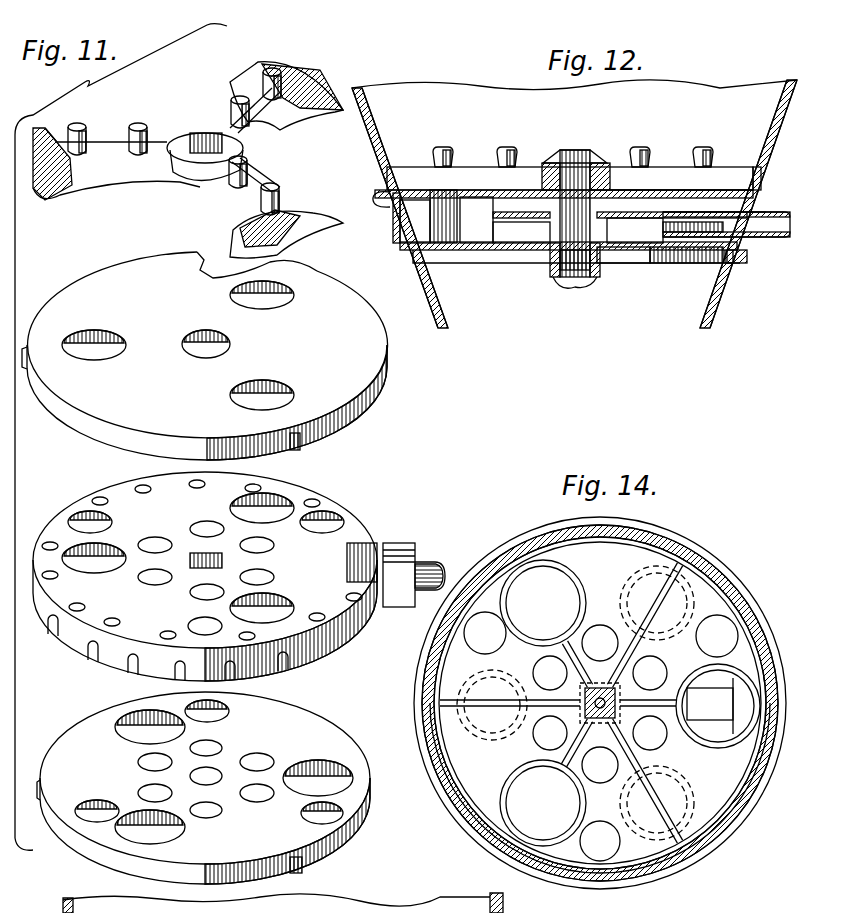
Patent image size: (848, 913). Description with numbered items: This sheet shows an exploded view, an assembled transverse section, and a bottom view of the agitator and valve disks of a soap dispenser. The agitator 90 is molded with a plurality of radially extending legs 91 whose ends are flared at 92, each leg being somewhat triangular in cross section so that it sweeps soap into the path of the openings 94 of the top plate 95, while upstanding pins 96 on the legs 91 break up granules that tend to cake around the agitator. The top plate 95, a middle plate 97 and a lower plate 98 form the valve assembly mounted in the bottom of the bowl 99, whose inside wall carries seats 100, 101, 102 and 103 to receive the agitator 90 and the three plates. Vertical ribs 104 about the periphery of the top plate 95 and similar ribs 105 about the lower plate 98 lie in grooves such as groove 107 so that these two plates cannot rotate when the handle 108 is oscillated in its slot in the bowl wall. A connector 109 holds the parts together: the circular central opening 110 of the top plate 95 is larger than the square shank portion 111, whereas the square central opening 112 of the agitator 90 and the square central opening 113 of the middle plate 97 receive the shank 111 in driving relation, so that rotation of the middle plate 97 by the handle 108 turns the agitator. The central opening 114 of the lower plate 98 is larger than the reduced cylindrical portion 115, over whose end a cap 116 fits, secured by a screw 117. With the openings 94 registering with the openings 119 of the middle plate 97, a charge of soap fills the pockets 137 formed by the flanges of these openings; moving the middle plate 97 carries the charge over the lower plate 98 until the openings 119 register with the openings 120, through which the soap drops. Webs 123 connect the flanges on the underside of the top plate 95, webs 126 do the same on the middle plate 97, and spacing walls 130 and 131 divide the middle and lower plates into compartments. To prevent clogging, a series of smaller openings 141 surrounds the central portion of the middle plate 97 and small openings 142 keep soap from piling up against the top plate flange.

In FIG. 11, the agitator 90 is at (120, 178).
In FIG. 12, the agitator 90 is at (472, 165).
In FIG. 11, the legs 91 is at (280, 130).
In FIG. 11, the flared ends 92 is at (320, 80).
In FIG. 11, the openings 94 is at (103, 337).
In FIG. 12, the openings 94 is at (393, 210).
In FIG. 11, the top plate 95 is at (367, 375).
In FIG. 12, the top plate 95 is at (522, 190).
In FIG. 11, the upstanding pins 96 is at (138, 125).
In FIG. 12, the upstanding pins 96 is at (441, 147).
In FIG. 11, the middle plate 97 is at (360, 520).
In FIG. 12, the middle plate 97 is at (522, 218).
In FIG. 11, the lower plate 98 is at (337, 740).
In FIG. 12, the lower plate 98 is at (523, 250).
In FIG. 14, the lower plate 98 is at (718, 790).
In FIG. 12, the bowl 99 is at (747, 92).
In FIG. 14, the bowl 99 is at (613, 845).
In FIG. 12, the seat 100 is at (761, 186).
In FIG. 12, the seat 101 is at (765, 212).
In FIG. 12, the seat 102 is at (737, 262).
In FIG. 11, the seat 103 is at (95, 802).
In FIG. 12, the seat 103 is at (735, 277).
In FIG. 14, the seat 103 is at (713, 622).
In FIG. 11, the vertical ribs 104 is at (260, 800).
In FIG. 14, the vertical ribs 104 is at (537, 673).
In FIG. 11, the ribs 105 is at (293, 703).
In FIG. 14, the ribs 105 is at (683, 857).
In FIG. 14, the groove 107 is at (687, 845).
In FIG. 11, the handle 108 is at (423, 563).
In FIG. 12, the handle 108 is at (760, 238).
In FIG. 12, the connector 109 is at (583, 152).
In FIG. 11, the central opening 110 is at (182, 350).
In FIG. 12, the central opening 110 is at (562, 197).
In FIG. 12, the square shank portion 111 is at (623, 183).
In FIG. 14, the square shank portion 111 is at (652, 672).
In FIG. 11, the central opening 112 is at (197, 133).
In FIG. 11, the central opening 113 is at (190, 553).
In FIG. 11, the central opening 114 is at (207, 773).
In FIG. 12, the reduced cylindrical portion 115 is at (600, 263).
In FIG. 14, the reduced cylindrical portion 115 is at (600, 720).
In FIG. 12, the cap 116 is at (597, 275).
In FIG. 12, the screw 117 is at (570, 282).
In FIG. 11, the openings 119 is at (72, 550).
In FIG. 11, the openings 120 is at (322, 517).
In FIG. 12, the openings 120 is at (697, 257).
In FIG. 14, the openings 120 is at (707, 733).
In FIG. 12, the webs 123 is at (512, 205).
In FIG. 12, the webs 126 is at (507, 233).
In FIG. 12, the spacing walls 130 is at (633, 250).
In FIG. 12, the spacing walls 131 is at (430, 260).
In FIG. 12, the pockets 137 is at (477, 230).
In FIG. 14, the pockets 137 is at (640, 575).
In FIG. 11, the smaller openings 141 is at (267, 568).
In FIG. 11, the small openings 142 is at (100, 498).